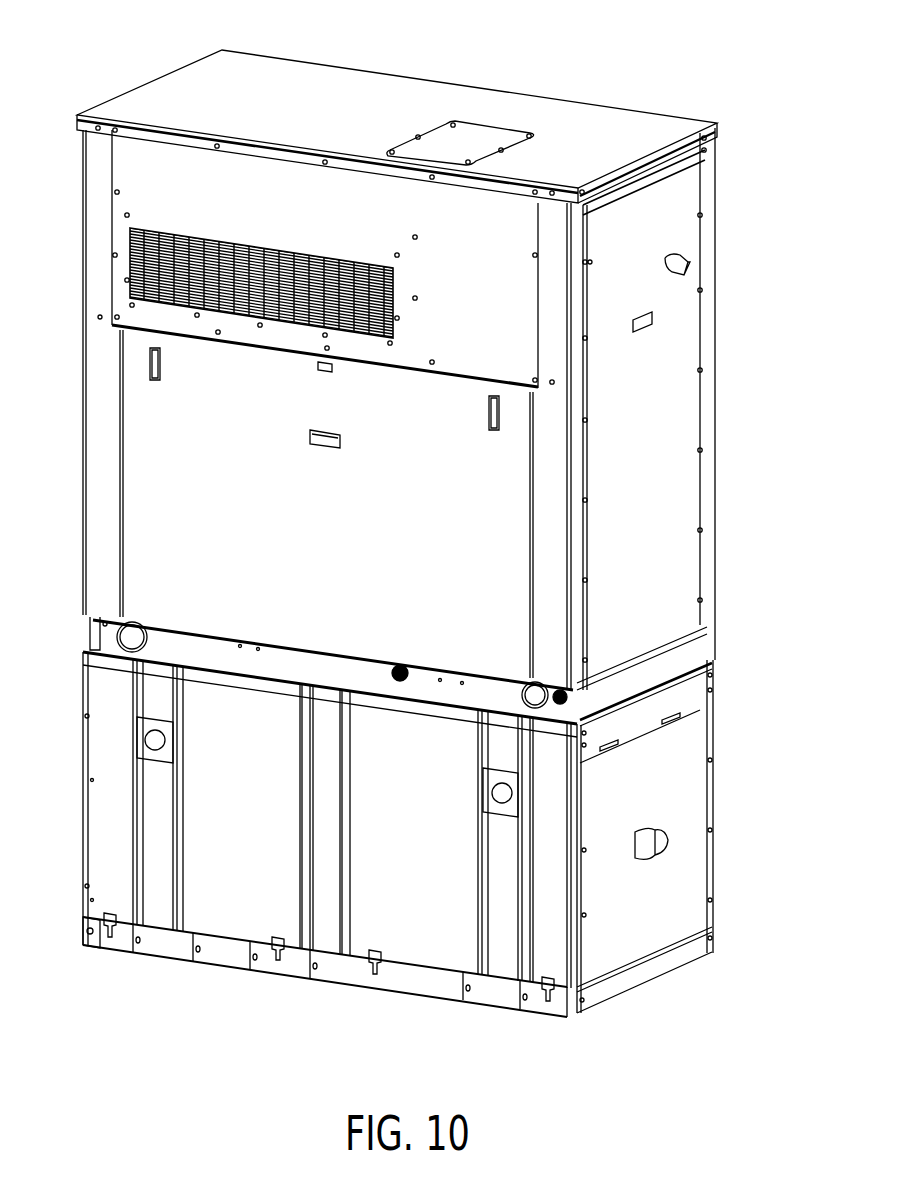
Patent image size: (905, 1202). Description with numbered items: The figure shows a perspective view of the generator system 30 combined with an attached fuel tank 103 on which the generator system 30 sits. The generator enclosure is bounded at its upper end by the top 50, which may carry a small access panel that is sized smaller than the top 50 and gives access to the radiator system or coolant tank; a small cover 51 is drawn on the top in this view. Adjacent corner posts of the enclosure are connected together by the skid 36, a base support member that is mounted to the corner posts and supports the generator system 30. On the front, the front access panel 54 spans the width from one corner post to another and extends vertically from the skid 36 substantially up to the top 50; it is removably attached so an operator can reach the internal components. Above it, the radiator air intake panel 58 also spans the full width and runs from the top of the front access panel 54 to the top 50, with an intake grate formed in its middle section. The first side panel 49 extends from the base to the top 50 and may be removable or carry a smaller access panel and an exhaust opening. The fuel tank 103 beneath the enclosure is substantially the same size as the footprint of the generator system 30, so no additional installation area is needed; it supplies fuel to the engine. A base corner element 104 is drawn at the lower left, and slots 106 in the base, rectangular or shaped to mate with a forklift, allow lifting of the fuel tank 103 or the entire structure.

The generator system 30 is at (112, 37).
The top 50 is at (575, 115).
The access cover 51 is at (477, 135).
The radiator air intake panel 58 is at (163, 190).
The front access panel 54 is at (140, 427).
The first side panel 49 is at (668, 433).
The skid 36 is at (105, 633).
The fuel tank 103 is at (123, 773).
The corner bracket 104 is at (88, 933).
The slots 106 is at (227, 953).